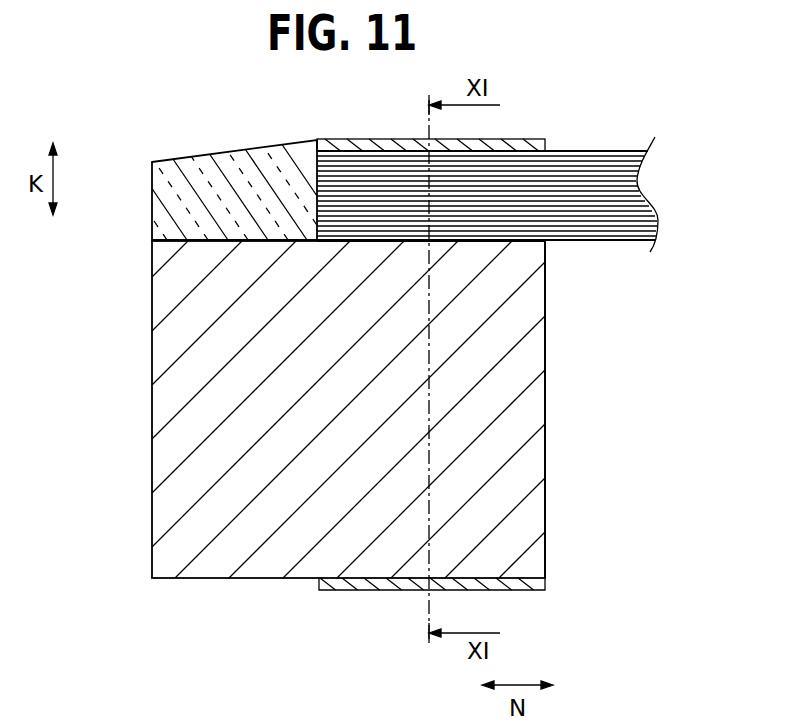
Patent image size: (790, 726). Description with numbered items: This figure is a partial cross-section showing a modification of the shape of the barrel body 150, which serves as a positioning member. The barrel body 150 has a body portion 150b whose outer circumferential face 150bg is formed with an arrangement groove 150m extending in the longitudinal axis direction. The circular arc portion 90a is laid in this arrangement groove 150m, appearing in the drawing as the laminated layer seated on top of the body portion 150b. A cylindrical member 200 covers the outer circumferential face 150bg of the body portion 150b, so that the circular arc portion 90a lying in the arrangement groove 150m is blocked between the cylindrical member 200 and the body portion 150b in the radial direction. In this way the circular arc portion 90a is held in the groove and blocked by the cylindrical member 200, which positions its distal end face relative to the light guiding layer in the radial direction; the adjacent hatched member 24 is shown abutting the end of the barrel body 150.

The nozzle plate / ink flow path member 24 is at (248, 190).
The cylindrical member 200 is at (505, 145).
The circular arc portion 90a is at (618, 195).
The barrel body 150 is at (217, 453).
The outer circumferential face 150bg is at (367, 243).
The arrangement groove 150m is at (477, 243).
The body portion 150b is at (490, 450).